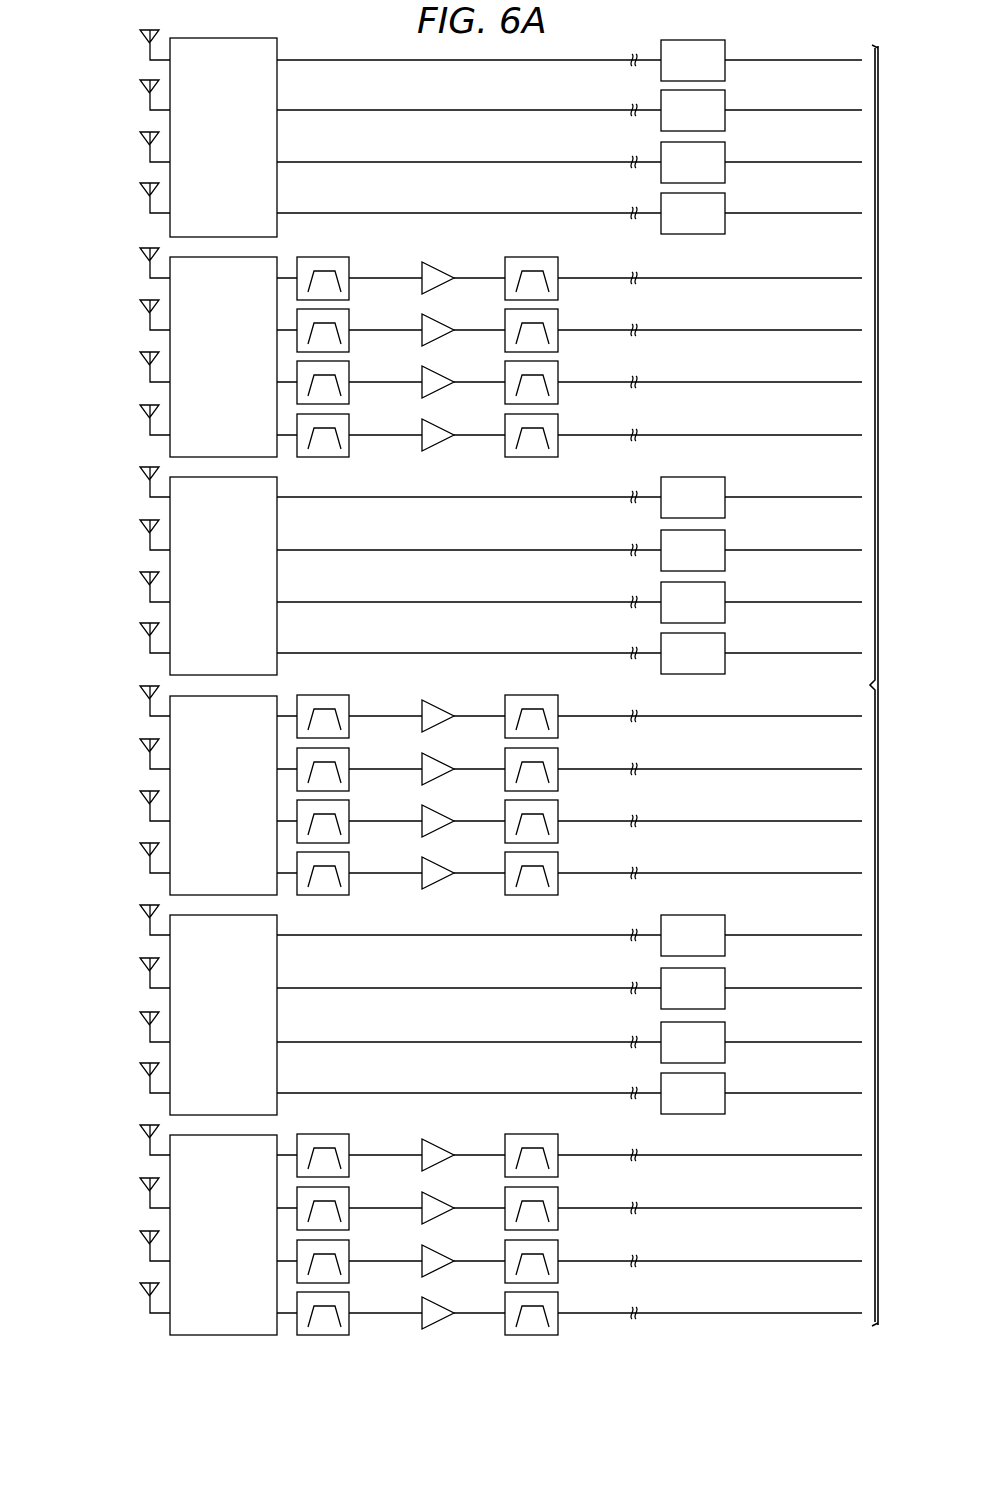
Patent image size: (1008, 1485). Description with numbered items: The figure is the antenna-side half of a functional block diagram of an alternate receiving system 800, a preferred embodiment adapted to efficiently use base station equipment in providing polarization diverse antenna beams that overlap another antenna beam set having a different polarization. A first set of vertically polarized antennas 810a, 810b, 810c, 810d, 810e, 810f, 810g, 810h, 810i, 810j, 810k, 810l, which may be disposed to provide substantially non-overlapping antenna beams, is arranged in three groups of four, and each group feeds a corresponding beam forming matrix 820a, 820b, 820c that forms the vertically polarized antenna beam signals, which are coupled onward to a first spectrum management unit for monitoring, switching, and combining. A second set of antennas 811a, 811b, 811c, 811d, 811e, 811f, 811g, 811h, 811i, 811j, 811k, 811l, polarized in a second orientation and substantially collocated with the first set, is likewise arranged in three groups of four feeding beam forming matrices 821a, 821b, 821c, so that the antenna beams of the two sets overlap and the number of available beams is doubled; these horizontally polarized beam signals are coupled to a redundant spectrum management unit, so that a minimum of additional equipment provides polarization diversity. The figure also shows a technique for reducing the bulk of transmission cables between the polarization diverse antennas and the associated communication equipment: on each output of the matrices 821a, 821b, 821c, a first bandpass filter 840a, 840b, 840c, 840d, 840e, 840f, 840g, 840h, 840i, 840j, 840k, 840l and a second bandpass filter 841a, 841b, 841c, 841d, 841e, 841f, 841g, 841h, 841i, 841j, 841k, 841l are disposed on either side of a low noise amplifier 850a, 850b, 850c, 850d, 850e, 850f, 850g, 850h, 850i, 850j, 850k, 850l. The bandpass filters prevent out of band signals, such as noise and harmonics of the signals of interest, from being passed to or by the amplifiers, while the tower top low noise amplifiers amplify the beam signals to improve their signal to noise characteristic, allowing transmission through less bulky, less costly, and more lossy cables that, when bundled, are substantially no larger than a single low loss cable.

The system 800 is at (335, 43).
The antenna 810a is at (139, 37).
The antenna 810b is at (139, 87).
The antenna 810c is at (139, 139).
The antenna 810d is at (139, 190).
The antenna 810e is at (139, 474).
The antenna 810f is at (139, 527).
The antenna 810g is at (139, 579).
The antenna 810h is at (139, 630).
The antenna 810i is at (139, 912).
The antenna 810j is at (139, 965).
The antenna 810k is at (139, 1019).
The antenna 810l is at (139, 1070).
The antenna 811a is at (139, 255).
The antenna 811b is at (139, 307).
The antenna 811c is at (139, 359).
The antenna 811d is at (139, 412).
The antenna 811e is at (139, 693).
The antenna 811f is at (139, 746).
The antenna 811g is at (139, 798).
The antenna 811h is at (139, 850).
The antenna 811i is at (139, 1132).
The antenna 811j is at (139, 1185).
The antenna 811k is at (139, 1238).
The antenna 811l is at (139, 1290).
The beam forming matrix 820a is at (199, 192).
The beam forming matrix 820b is at (199, 631).
The beam forming matrix 820c is at (199, 1070).
The beam forming matrix 821a is at (199, 411).
The beam forming matrix 821b is at (199, 850).
The beam forming matrix 821c is at (199, 1290).
The bandpass filter 840a is at (351, 272).
The bandpass filter 840b is at (351, 324).
The bandpass filter 840c is at (351, 376).
The bandpass filter 840d is at (351, 429).
The bandpass filter 840e is at (351, 710).
The bandpass filter 840f is at (351, 763).
The bandpass filter 840g is at (351, 815).
The bandpass filter 840h is at (351, 867).
The bandpass filter 840i is at (351, 1149).
The bandpass filter 840j is at (351, 1202).
The bandpass filter 840k is at (351, 1255).
The bandpass filter 840l is at (351, 1307).
The low noise amplifier 850a is at (436, 269).
The low noise amplifier 850b is at (436, 321).
The low noise amplifier 850c is at (436, 373).
The low noise amplifier 850d is at (436, 426).
The low noise amplifier 850e is at (436, 707).
The low noise amplifier 850f is at (436, 760).
The low noise amplifier 850g is at (436, 812).
The low noise amplifier 850h is at (436, 864).
The low noise amplifier 850i is at (436, 1146).
The low noise amplifier 850j is at (436, 1199).
The low noise amplifier 850k is at (436, 1252).
The low noise amplifier 850l is at (436, 1304).
The bandpass filter 841a is at (560, 270).
The bandpass filter 841b is at (560, 322).
The bandpass filter 841c is at (560, 374).
The bandpass filter 841d is at (560, 427).
The bandpass filter 841e is at (560, 708).
The bandpass filter 841f is at (560, 761).
The bandpass filter 841g is at (560, 813).
The bandpass filter 841h is at (560, 865).
The bandpass filter 841i is at (560, 1147).
The bandpass filter 841j is at (560, 1200).
The bandpass filter 841k is at (560, 1253).
The bandpass filter 841l is at (596, 1297).